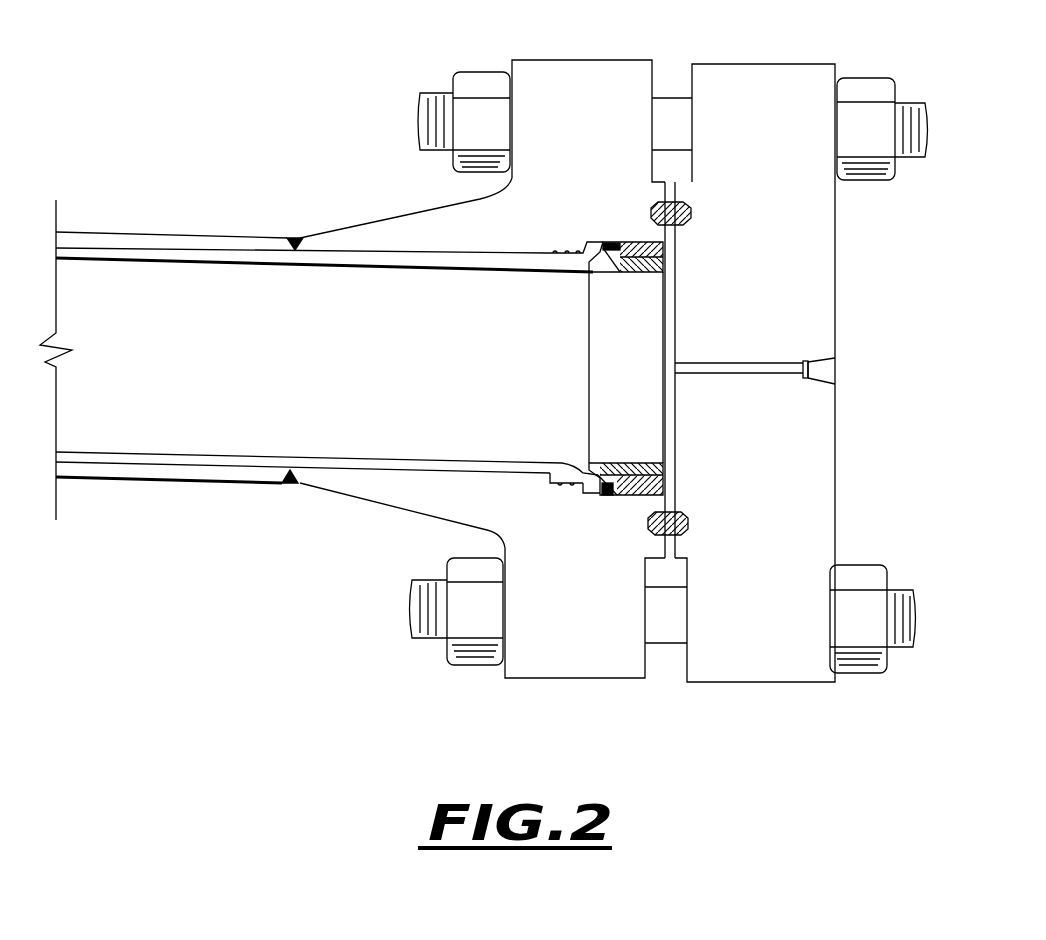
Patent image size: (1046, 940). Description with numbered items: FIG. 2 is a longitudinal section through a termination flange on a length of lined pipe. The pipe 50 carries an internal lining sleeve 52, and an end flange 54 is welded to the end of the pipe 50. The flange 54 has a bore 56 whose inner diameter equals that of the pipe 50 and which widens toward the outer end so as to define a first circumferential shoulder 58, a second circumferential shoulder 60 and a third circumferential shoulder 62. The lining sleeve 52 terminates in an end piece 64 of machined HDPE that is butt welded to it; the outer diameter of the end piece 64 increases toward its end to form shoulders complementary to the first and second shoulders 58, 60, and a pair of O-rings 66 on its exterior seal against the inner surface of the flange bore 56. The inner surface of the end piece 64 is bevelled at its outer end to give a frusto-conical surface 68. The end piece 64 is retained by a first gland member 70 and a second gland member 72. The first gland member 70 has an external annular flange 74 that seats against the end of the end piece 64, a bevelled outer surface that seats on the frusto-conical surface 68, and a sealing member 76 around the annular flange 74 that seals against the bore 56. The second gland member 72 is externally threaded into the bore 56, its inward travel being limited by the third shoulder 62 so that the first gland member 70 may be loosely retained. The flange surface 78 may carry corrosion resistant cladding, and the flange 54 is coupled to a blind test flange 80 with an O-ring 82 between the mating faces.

The pipe 50 is at (190, 240).
The lining sleeve 52 is at (150, 445).
The end flange 54 is at (603, 70).
The bore 56 is at (405, 243).
The first circumferential shoulder 58 is at (548, 250).
The second circumferential shoulder 60 is at (582, 241).
The third circumferential shoulder 62 is at (610, 242).
The end piece 64 is at (358, 468).
The O-rings 66 is at (562, 487).
The frusto-conical surface 68 is at (565, 462).
The first gland member 70 is at (643, 278).
The second gland member 72 is at (659, 226).
The annular flange 74 is at (592, 493).
The sealing member 76 is at (606, 497).
The flange surface 78 is at (670, 509).
The blind test flange 80 is at (812, 324).
The O-ring 82 is at (695, 213).